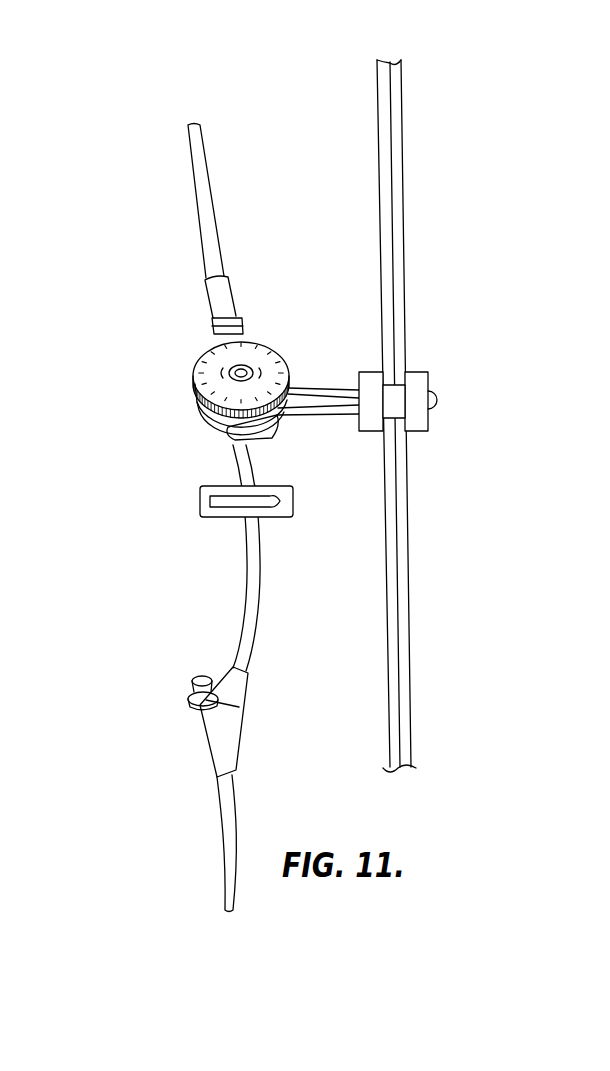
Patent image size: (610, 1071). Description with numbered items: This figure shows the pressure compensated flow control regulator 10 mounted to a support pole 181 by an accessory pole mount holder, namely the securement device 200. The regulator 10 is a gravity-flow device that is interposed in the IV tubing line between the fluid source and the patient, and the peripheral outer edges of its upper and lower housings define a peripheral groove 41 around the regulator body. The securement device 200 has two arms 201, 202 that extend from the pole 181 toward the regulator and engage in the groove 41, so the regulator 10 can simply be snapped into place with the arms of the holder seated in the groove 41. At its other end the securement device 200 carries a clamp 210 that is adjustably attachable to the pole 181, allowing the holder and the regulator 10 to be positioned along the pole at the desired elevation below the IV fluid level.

The flow control regulator 10 is at (202, 279).
The peripheral groove 41 is at (200, 413).
The IV pole 181 is at (403, 191).
The securement device 200 is at (387, 420).
The arm 201 is at (311, 388).
The arm 202 is at (260, 447).
The clamp 210 is at (427, 415).